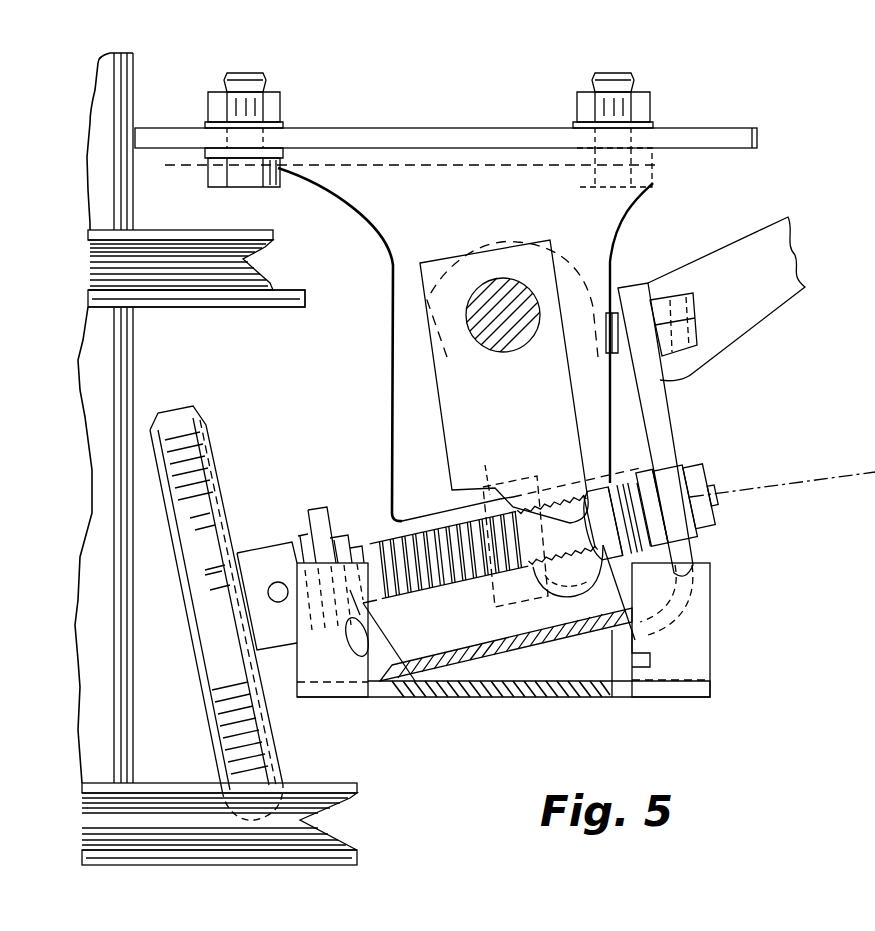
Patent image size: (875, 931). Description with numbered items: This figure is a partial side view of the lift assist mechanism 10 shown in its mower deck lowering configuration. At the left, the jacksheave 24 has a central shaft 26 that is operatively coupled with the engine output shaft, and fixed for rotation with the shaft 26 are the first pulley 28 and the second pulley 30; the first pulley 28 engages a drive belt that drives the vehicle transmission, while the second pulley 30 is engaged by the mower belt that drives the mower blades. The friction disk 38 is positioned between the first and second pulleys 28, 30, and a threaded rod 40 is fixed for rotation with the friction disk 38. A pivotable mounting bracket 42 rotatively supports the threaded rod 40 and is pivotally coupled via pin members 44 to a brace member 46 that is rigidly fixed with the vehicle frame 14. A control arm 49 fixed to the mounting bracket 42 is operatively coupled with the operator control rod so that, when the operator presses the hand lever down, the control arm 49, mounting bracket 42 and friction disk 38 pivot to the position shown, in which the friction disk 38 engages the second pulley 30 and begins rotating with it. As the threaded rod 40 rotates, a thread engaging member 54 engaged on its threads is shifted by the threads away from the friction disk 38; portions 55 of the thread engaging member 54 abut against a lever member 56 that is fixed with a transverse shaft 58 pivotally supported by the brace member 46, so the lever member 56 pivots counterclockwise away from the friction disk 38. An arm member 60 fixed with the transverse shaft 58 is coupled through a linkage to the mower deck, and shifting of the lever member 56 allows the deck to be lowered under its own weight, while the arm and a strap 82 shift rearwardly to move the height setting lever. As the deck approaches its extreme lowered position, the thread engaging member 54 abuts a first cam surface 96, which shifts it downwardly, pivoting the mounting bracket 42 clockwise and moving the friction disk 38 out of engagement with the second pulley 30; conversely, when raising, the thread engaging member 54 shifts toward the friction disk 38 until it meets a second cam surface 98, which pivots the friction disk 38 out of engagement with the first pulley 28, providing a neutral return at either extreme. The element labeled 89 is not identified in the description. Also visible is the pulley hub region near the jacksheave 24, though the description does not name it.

The lift assist mechanism 10 is at (778, 168).
The vehicle frame 14 is at (372, 128).
The jacksheave 24 is at (133, 343).
The central shaft 26 is at (117, 105).
The first pulley 28 is at (273, 237).
The second pulley 30 is at (332, 866).
The friction disk 38 is at (190, 408).
The threaded rod 40 is at (373, 538).
The mounting bracket 42 is at (462, 647).
The pin members 44 is at (529, 501).
The brace member 46 is at (438, 697).
The control arm 49 is at (747, 330).
The thread engaging member 54 is at (547, 594).
The portions of the thread engaging member 55 is at (565, 500).
The lever member 56 is at (392, 350).
The transverse shaft 58 is at (495, 305).
The arm member 60 is at (594, 298).
The strap 82 is at (805, 460).
The pulley hub 89 is at (243, 307).
The first cam surface 96 is at (662, 647).
The second cam surface 98 is at (355, 657).